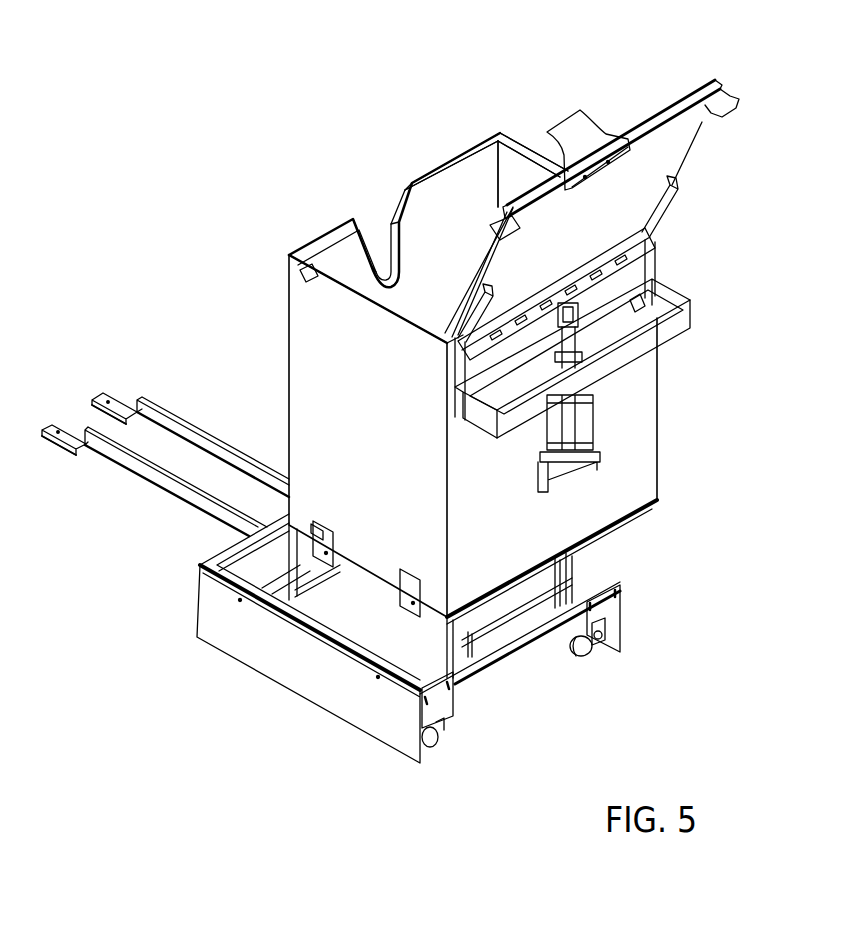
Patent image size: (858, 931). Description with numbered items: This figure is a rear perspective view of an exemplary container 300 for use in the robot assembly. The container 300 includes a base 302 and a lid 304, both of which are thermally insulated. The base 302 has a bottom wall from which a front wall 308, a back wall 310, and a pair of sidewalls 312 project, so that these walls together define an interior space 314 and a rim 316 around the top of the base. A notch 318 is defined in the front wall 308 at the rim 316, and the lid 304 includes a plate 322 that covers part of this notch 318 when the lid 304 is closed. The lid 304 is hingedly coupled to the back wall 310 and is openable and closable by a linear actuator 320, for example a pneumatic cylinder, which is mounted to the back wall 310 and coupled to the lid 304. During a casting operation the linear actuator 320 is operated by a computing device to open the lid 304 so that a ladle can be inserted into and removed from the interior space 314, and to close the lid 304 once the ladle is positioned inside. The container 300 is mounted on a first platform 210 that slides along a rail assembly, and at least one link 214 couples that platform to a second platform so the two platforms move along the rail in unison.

The container 300 is at (630, 78).
The base 302 is at (674, 452).
The lid 304 is at (710, 157).
The front wall 308 is at (475, 193).
The back wall 310 is at (625, 468).
The sidewalls 312 is at (518, 184).
The interior space 314 is at (450, 244).
The rim 316 is at (437, 178).
The notch 318 is at (380, 253).
The linear actuator 320 is at (578, 430).
The plate 322 is at (580, 140).
The first platform 210 is at (297, 670).
The link 214 is at (163, 467).